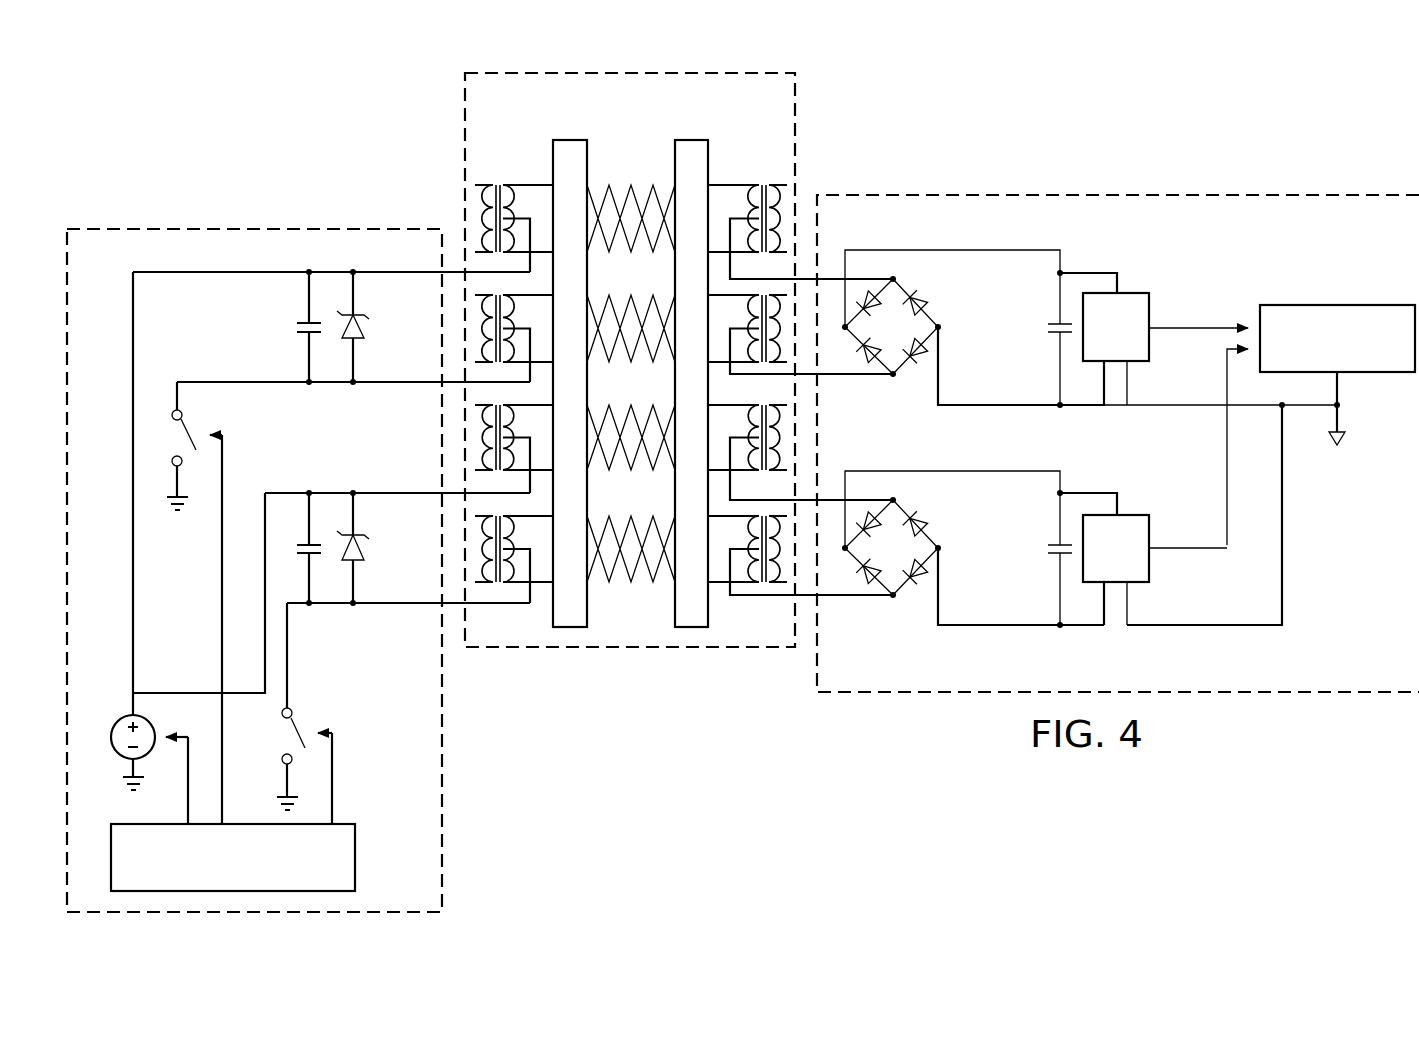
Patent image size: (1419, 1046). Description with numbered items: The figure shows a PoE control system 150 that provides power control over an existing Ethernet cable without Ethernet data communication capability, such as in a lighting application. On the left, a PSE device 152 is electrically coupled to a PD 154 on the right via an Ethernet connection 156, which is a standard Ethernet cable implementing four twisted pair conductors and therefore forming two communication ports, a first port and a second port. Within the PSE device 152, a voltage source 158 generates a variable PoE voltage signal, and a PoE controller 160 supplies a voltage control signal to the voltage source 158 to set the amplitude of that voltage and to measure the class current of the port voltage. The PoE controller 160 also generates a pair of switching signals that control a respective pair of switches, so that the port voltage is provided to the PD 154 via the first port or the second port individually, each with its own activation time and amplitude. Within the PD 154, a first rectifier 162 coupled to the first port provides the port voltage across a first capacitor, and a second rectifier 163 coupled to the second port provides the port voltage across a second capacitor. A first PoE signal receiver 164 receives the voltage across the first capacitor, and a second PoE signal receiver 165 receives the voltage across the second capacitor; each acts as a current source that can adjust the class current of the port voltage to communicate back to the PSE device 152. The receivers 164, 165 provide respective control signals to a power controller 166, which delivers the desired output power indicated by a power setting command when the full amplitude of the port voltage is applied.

The PoE control system 150 is at (960, 98).
The PSE device 152 is at (200, 226).
The PD 154 is at (1188, 192).
The Ethernet connection 156 is at (564, 70).
The voltage source 158 is at (111, 736).
The PoE controller 160 is at (356, 858).
The first rectifier 162 is at (917, 390).
The second rectifier 163 is at (917, 611).
The first PoE signal receiver 164 is at (1150, 348).
The second PoE signal receiver 165 is at (1150, 570).
The power controller 166 is at (1360, 305).